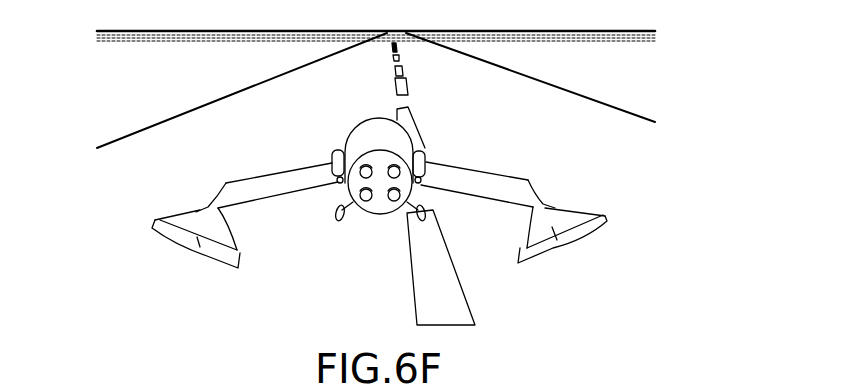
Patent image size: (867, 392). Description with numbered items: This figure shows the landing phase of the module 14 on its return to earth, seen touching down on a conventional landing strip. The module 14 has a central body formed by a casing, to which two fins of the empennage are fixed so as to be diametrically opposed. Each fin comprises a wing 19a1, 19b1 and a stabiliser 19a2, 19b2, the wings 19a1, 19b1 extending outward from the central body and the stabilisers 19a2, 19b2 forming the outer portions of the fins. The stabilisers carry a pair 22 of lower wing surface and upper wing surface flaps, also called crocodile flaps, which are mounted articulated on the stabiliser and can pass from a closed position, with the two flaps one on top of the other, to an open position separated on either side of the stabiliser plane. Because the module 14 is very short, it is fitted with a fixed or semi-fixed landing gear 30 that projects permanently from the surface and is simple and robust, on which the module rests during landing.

The module 14 is at (363, 113).
The wing 19a1 is at (287, 180).
The wing 19b1 is at (465, 163).
The stabiliser 19a2 is at (567, 208).
The stabiliser 19b2 is at (190, 213).
The pair of lower wing surface and upper wing surface flaps 22 is at (208, 262).
The landing gear 30 is at (420, 223).